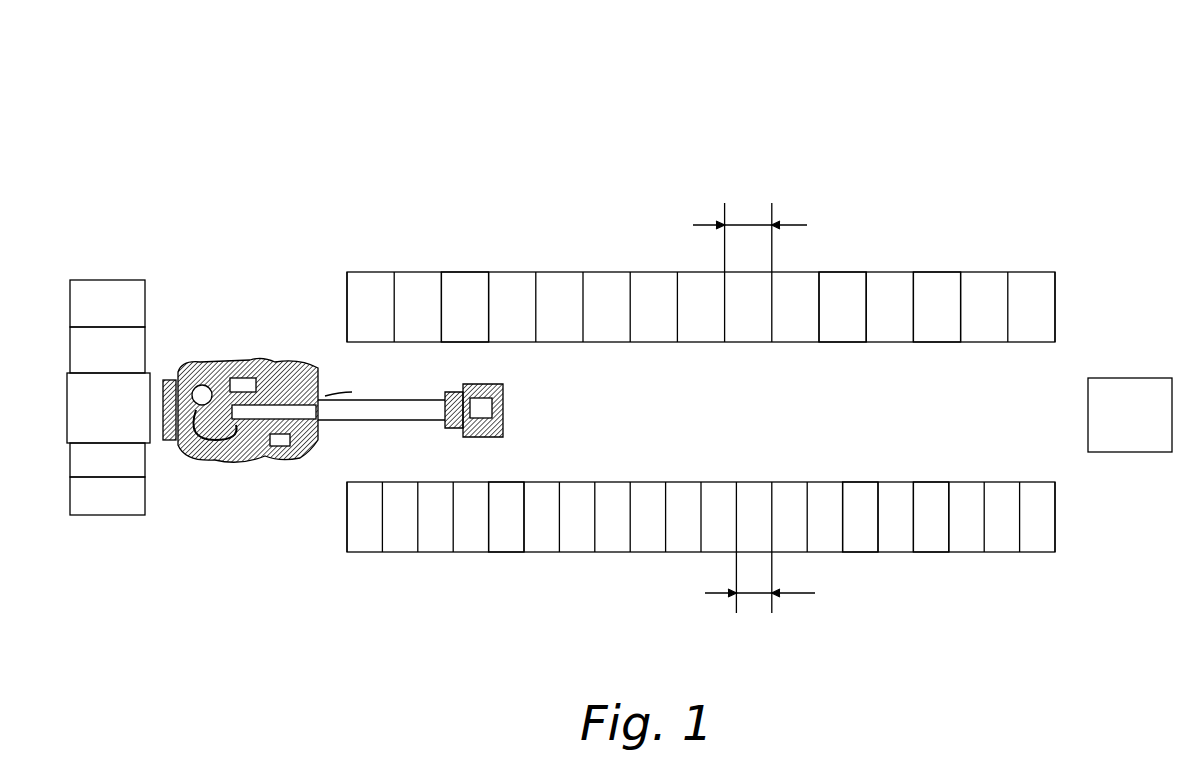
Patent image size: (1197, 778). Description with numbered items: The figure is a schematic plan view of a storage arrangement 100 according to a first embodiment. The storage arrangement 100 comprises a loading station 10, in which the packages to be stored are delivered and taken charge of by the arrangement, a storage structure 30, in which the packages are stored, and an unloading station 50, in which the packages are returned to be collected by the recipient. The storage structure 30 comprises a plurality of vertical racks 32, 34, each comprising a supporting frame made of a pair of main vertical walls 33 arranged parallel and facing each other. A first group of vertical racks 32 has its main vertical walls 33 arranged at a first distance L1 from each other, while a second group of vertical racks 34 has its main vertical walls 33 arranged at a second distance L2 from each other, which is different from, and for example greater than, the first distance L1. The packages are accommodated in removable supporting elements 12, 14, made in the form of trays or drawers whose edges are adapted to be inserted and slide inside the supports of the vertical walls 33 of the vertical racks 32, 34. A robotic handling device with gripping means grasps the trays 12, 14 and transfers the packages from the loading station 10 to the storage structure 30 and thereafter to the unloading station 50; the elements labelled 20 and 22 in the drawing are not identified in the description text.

The storage arrangement 100 is at (872, 133).
The loading station 10 is at (352, 404).
The removable supporting element 12 is at (120, 495).
The removable supporting element 14 is at (104, 302).
The machine body 20 is at (268, 478).
The attachment tool 22 is at (503, 415).
The storage structure 30 is at (630, 232).
The vertical rack 32 is at (585, 552).
The main vertical wall 33 is at (965, 318).
The vertical rack 34 is at (558, 272).
The unloading station 50 is at (1130, 400).
The first distance L1 is at (760, 600).
The second distance L2 is at (750, 220).